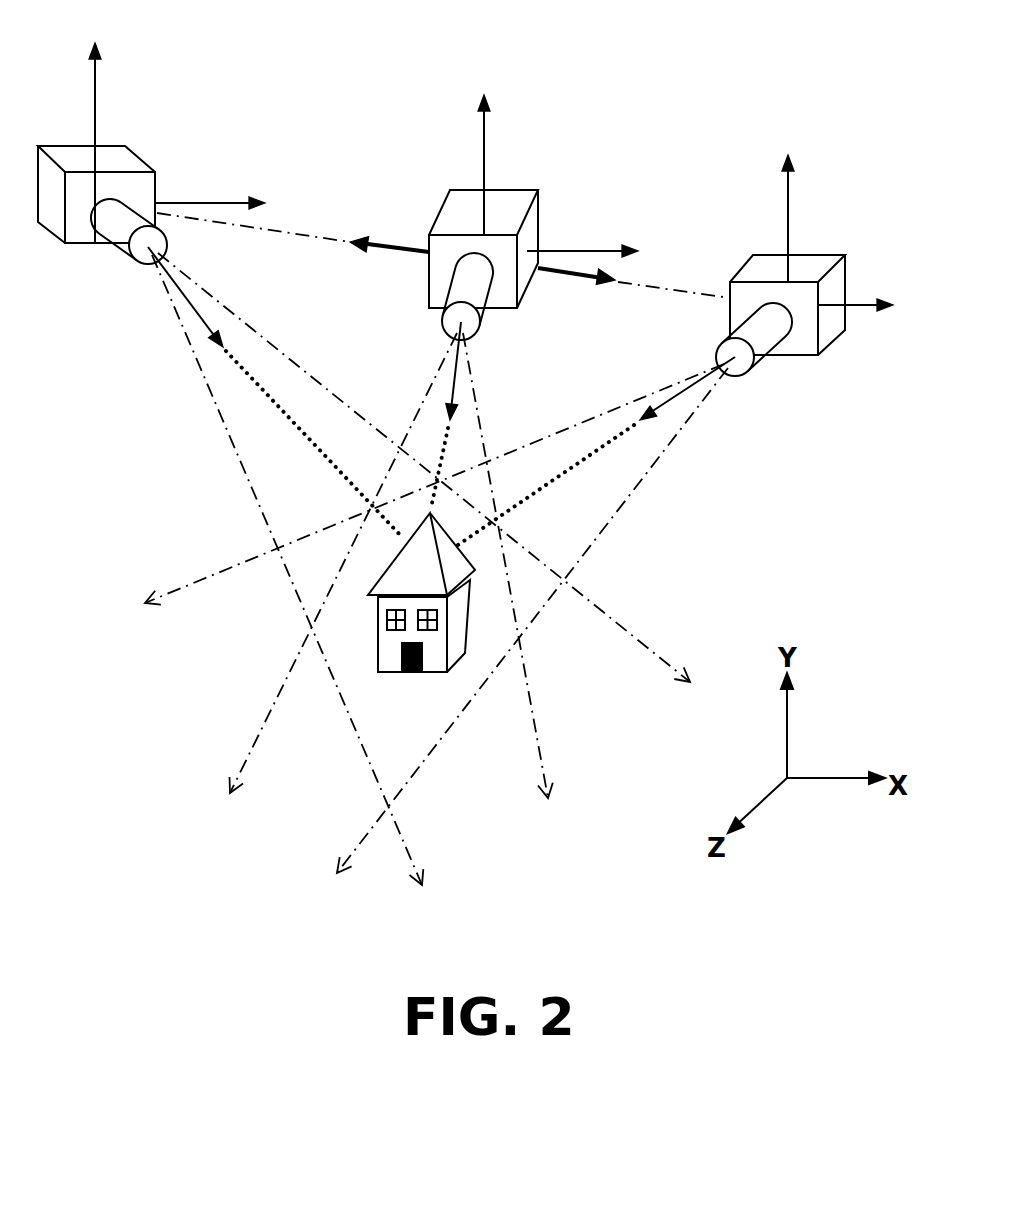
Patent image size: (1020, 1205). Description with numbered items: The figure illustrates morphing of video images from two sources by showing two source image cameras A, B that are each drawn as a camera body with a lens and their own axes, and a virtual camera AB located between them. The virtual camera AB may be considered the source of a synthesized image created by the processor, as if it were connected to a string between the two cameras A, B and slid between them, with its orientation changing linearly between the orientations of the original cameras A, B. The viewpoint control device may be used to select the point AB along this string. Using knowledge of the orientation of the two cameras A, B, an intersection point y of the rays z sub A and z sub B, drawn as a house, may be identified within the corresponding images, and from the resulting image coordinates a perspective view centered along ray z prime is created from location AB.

The camera A is at (364, 444).
The virtual camera AB is at (477, 429).
The camera B is at (538, 497).
The intersection point y is at (421, 621).